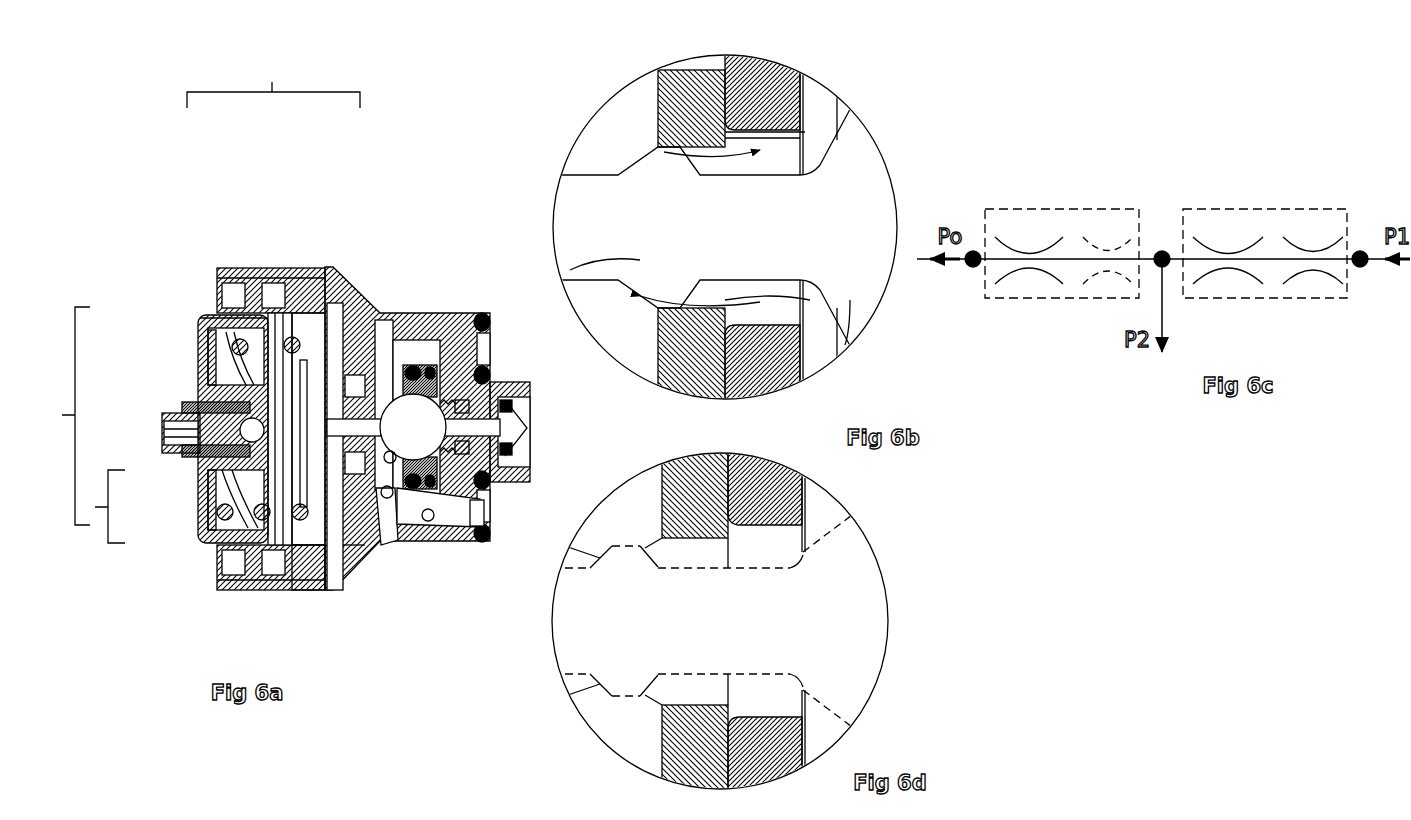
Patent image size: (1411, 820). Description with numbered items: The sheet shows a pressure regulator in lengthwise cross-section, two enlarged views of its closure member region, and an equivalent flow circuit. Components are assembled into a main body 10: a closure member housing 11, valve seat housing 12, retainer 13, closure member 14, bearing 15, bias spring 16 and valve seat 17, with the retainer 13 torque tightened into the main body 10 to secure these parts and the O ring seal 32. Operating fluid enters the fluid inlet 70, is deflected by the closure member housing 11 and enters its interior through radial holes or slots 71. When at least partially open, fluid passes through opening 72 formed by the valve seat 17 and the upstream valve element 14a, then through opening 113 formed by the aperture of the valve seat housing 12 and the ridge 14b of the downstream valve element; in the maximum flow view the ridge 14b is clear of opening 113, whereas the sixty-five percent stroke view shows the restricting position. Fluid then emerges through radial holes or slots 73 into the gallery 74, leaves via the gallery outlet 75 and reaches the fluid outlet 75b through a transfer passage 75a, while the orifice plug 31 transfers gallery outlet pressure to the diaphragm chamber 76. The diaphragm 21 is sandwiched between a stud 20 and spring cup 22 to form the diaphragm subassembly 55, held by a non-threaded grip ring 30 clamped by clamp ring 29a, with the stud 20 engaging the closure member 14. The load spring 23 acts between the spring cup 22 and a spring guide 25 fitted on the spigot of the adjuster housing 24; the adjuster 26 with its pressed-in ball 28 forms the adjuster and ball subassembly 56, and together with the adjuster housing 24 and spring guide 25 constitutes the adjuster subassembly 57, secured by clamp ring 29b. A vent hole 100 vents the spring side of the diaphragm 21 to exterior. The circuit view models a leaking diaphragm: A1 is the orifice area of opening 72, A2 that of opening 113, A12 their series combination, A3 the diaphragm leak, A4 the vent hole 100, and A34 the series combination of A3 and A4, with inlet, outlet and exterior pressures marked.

In FIG. 6A, the main body 10 is at (355, 283).
In FIG. 6A, the closure member housing 11 is at (522, 410).
In FIG. 6A, the valve seat housing 12 is at (405, 365).
In FIG. 6B, the valve seat housing 12 is at (656, 100).
In FIG. 6A, the retainer 13 is at (358, 352).
In FIG. 6A, the closure member 14 is at (481, 316).
In FIG. 6B, the closure member 14 is at (800, 212).
In FIG. 6B, the upstream valve element 14a is at (848, 318).
In FIG. 6B, the ridge of the downstream valve element 14b is at (655, 150).
In FIG. 6A, the bearing 15 is at (517, 405).
In FIG. 6A, the bias spring 16 is at (485, 398).
In FIG. 6B, the valve seat 17 is at (770, 110).
In FIG. 6A, the stud 20 is at (335, 303).
In FIG. 6A, the diaphragm 21 is at (302, 377).
In FIG. 6A, the spring cup 22 is at (280, 270).
In FIG. 6A, the load spring 23 is at (238, 335).
In FIG. 6A, the adjuster housing 24 is at (200, 328).
In FIG. 6A, the spring guide 25 is at (214, 385).
In FIG. 6A, the adjuster 26 is at (170, 455).
In FIG. 6A, the ball 28 is at (235, 470).
In FIG. 6A, the clamp ring 29a is at (268, 588).
In FIG. 6A, the clamp ring 29b is at (225, 588).
In FIG. 6A, the grip ring 30 is at (300, 585).
In FIG. 6A, the orifice plug 31 is at (352, 548).
In FIG. 6A, the O ring seal 32 is at (423, 367).
In FIG. 6A, the diaphragm subassembly 55 is at (273, 84).
In FIG. 6A, the adjuster and ball subassembly 56 is at (102, 506).
In FIG. 6A, the adjuster subassembly 57 is at (64, 416).
In FIG. 6A, the fluid inlet 70 is at (527, 430).
In FIG. 6A, the radial holes or slots 71 is at (447, 466).
In FIG. 6A, the radial holes or slots 73 is at (390, 457).
In FIG. 6B, the radial holes or slots 73 is at (615, 330).
In FIG. 6A, the gallery 74 is at (387, 492).
In FIG. 6A, the gallery outlet 75 is at (383, 520).
In FIG. 6A, the transfer passage 75a is at (428, 515).
In FIG. 6A, the fluid outlet 75b is at (478, 508).
In FIG. 6A, the diaphragm chamber 76 is at (330, 525).
In FIG. 6A, the vent hole 100 is at (218, 318).
In FIG. 6B, the opening 113 is at (680, 305).
In FIG. 6D, the opening 113 is at (663, 690).
In FIG. 6B, the opening 72 is at (800, 305).
In FIG. 6D, the opening 72 is at (802, 706).
In FIG. 6C, the equivalent orifice area of opening 72 A1 is at (1313, 245).
In FIG. 6C, the equivalent orifice area of opening 113 A2 is at (1228, 248).
In FIG. 6C, the equivalent orifice area of diaphragm leak path A3 is at (1110, 240).
In FIG. 6C, the equivalent orifice area of vent hole A4 is at (1033, 247).
In FIG. 6C, the equivalent orifice area of A1 and A2 in series A12 is at (1275, 302).
In FIG. 6C, the equivalent orifice area of A3 and A4 in series A34 is at (1065, 302).